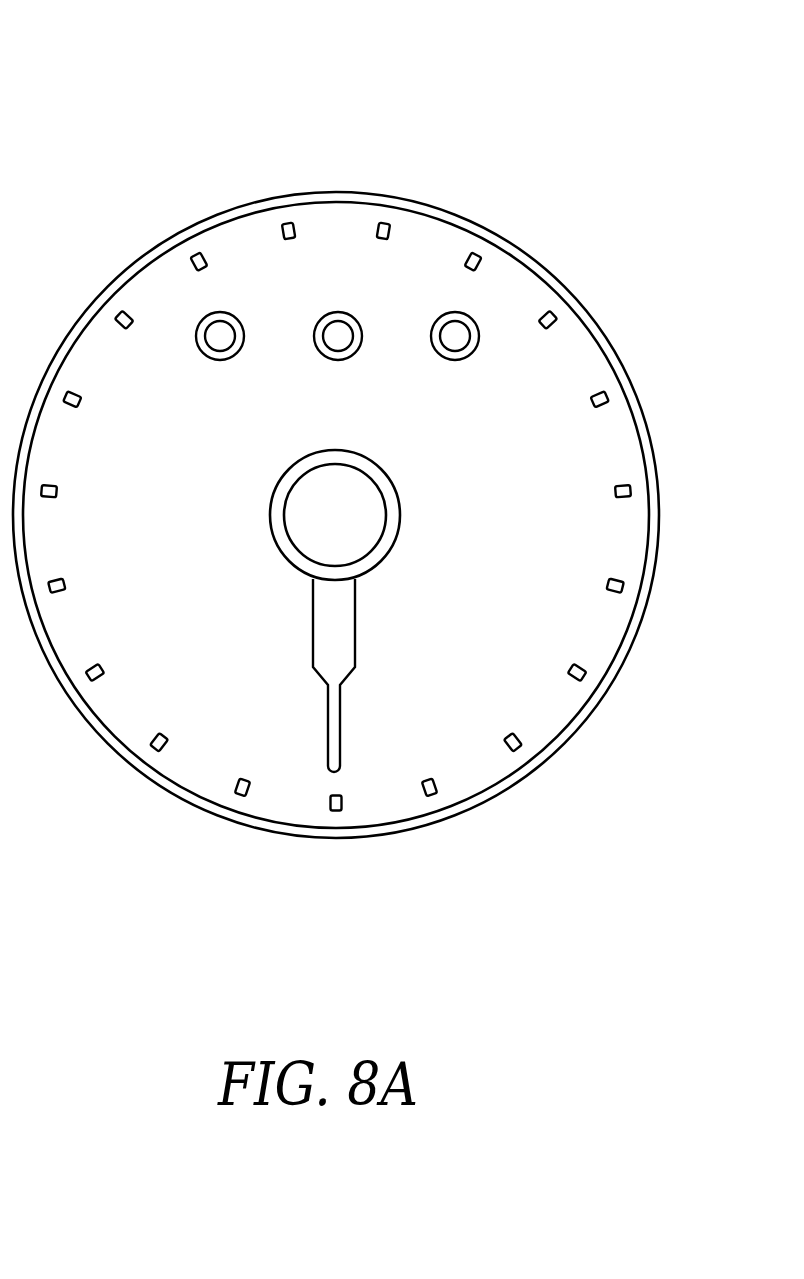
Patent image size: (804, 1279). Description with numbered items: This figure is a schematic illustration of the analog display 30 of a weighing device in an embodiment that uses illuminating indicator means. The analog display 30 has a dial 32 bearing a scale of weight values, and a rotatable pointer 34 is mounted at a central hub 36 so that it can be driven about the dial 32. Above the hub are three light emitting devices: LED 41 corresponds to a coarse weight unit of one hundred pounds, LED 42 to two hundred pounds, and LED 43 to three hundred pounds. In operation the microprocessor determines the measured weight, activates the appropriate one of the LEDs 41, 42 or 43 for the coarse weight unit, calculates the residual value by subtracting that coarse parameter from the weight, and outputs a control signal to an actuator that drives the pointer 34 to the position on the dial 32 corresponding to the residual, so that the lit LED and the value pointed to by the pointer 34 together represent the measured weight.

The analog display 30 is at (303, 155).
The dial 32 is at (400, 333).
The pointer 34 is at (332, 640).
The central hub 36 is at (355, 498).
The LED 41 is at (218, 332).
The LED 42 is at (333, 333).
The LED 43 is at (453, 334).